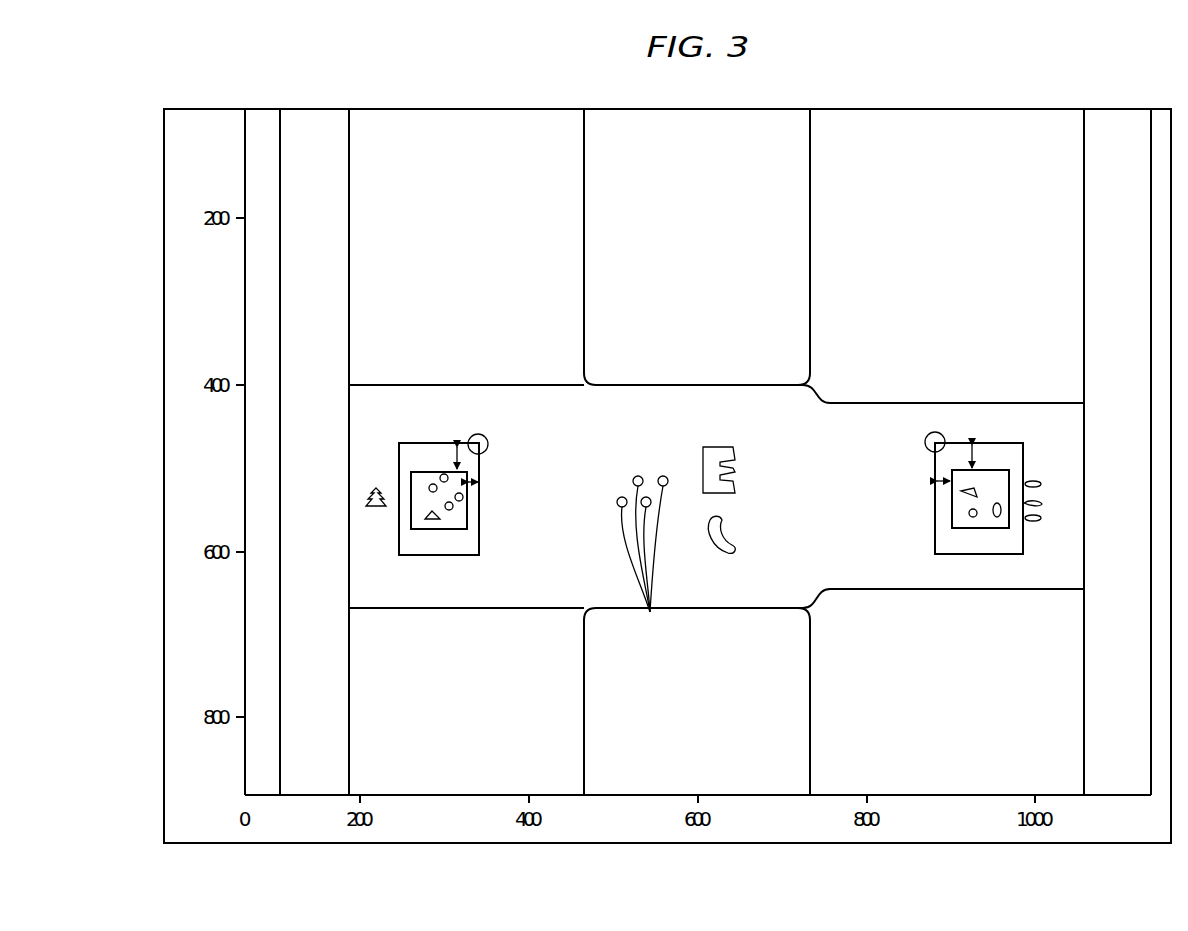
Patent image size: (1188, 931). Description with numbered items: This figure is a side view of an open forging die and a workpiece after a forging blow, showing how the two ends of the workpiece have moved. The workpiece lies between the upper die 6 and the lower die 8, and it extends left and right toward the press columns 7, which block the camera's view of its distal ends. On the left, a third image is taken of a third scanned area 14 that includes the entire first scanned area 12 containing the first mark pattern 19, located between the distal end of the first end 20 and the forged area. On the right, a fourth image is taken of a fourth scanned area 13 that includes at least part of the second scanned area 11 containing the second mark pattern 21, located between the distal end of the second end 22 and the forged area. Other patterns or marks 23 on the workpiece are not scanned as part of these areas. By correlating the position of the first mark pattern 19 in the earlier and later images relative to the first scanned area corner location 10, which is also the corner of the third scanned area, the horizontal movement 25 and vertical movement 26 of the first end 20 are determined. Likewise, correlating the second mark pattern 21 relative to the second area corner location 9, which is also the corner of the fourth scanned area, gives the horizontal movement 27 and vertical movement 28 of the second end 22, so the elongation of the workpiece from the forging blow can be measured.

The upper die 6 is at (783, 243).
The press columns 7 is at (328, 175).
The lower die 8 is at (800, 765).
The second area corner location 9 is at (935, 432).
The first scanned area corner location 10 is at (478, 434).
The second scanned area 11 is at (1003, 470).
The first scanned area 12 is at (420, 471).
The fourth scanned area 13 is at (1022, 443).
The third scanned area 14 is at (403, 443).
The first mark pattern 19 is at (433, 484).
The first end 20 is at (525, 455).
The second mark pattern 21 is at (997, 517).
The second end 22 is at (843, 422).
The other patterns or marks 23 is at (376, 508).
The horizontal movement 25 is at (480, 481).
The vertical movement 26 is at (457, 448).
The horizontal movement 27 is at (935, 477).
The vertical movement 28 is at (972, 447).